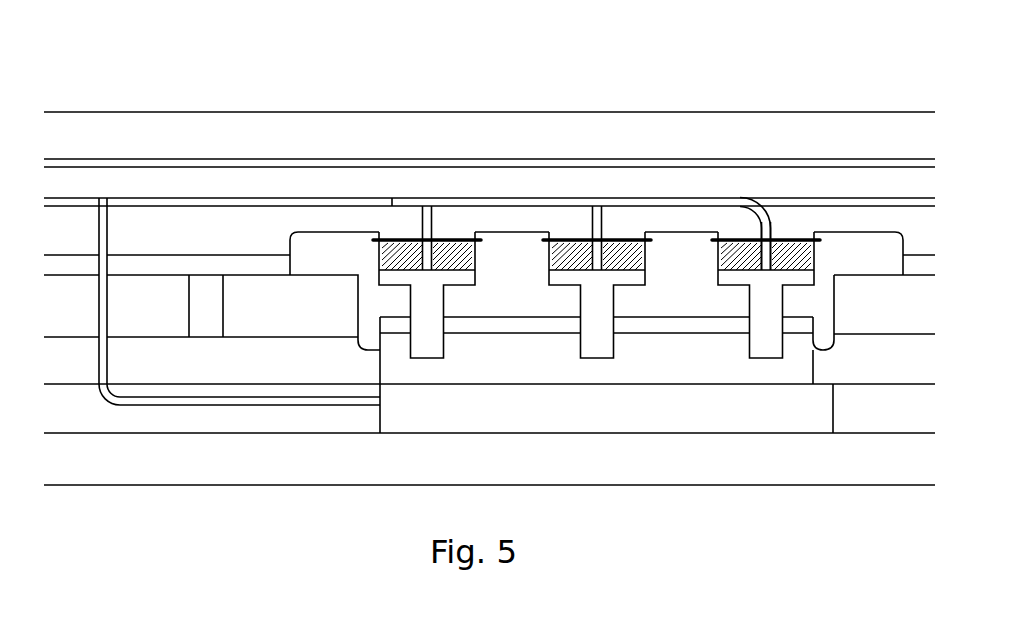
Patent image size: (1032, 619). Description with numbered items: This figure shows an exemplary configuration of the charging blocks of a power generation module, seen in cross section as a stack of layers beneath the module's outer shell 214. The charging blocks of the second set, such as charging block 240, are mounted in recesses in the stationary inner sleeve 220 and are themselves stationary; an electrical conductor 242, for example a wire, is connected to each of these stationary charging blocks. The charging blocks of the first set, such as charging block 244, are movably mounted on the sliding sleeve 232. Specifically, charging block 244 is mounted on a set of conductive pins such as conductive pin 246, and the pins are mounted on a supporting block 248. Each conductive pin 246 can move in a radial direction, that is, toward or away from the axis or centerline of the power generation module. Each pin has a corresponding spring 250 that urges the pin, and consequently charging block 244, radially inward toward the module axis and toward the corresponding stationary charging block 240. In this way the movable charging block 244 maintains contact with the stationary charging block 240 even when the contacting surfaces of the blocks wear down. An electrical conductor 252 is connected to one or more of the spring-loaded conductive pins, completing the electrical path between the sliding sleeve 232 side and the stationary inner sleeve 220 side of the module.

The outer shell 214 is at (681, 112).
The stationary inner sleeve 220 is at (780, 486).
The sliding sleeve 232 is at (752, 167).
The charging block 240 is at (835, 410).
The electrical conductor 242 is at (99, 365).
The charging block 244 is at (813, 367).
The conductive pin 246 is at (785, 298).
The supporting block 248 is at (860, 276).
The spring 250 is at (817, 255).
The electrical conductor 252 is at (768, 218).